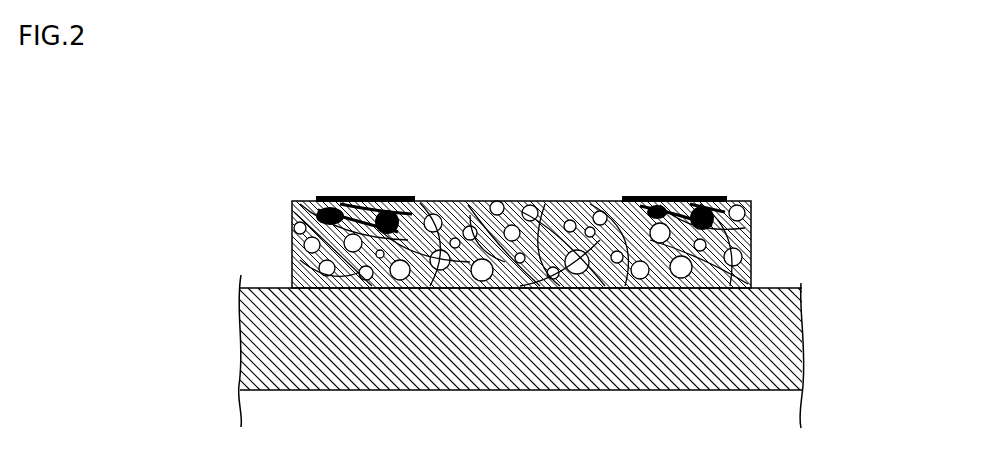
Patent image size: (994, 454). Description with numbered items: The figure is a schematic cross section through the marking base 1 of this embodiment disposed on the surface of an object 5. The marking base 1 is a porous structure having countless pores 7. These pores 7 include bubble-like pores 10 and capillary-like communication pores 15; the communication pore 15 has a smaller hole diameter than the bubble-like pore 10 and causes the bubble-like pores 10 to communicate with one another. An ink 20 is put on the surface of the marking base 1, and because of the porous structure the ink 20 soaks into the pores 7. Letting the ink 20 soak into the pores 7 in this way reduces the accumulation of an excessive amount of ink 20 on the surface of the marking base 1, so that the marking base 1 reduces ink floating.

The marking base 1 is at (518, 207).
The object 5 is at (778, 286).
The pores 7 is at (521, 206).
The bubble-like pore 10 is at (570, 224).
The communication pore 15 is at (551, 225).
The ink 20 is at (650, 198).